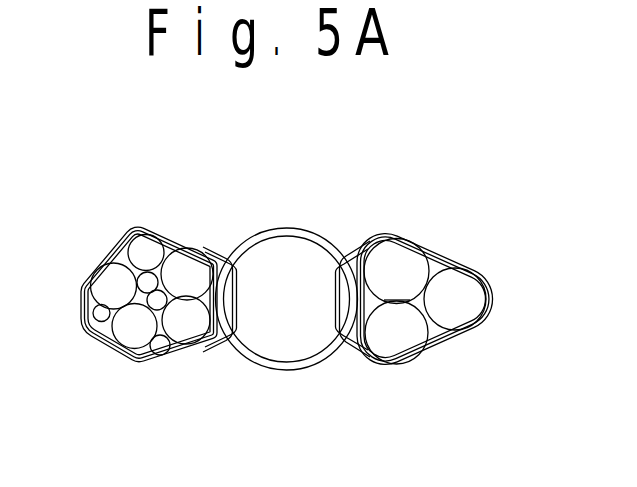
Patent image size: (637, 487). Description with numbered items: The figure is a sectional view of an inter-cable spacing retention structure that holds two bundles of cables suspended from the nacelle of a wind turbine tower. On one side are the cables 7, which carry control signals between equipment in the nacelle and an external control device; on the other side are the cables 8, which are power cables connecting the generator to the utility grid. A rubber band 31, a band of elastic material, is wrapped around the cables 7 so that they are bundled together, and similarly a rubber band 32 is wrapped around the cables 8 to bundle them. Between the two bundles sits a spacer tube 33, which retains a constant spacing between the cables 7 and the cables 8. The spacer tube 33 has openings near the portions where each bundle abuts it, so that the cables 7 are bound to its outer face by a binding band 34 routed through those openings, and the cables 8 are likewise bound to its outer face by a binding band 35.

The cables 7 is at (129, 334).
The cables 8 is at (400, 352).
The rubber band 31 is at (227, 338).
The rubber band 32 is at (348, 346).
The spacer tube 33 is at (285, 362).
The binding band 34 is at (225, 261).
The binding band 35 is at (344, 260).